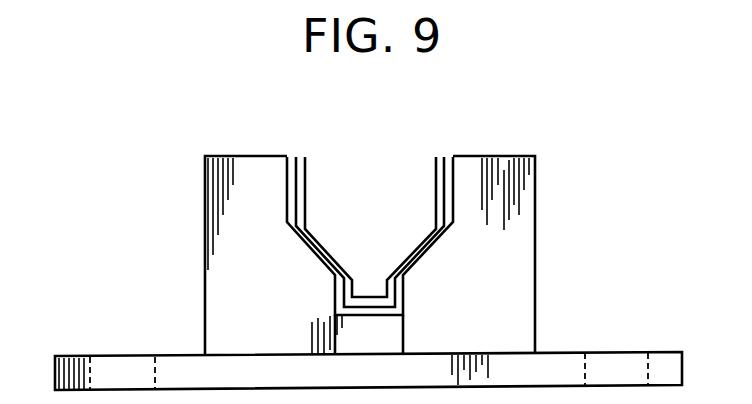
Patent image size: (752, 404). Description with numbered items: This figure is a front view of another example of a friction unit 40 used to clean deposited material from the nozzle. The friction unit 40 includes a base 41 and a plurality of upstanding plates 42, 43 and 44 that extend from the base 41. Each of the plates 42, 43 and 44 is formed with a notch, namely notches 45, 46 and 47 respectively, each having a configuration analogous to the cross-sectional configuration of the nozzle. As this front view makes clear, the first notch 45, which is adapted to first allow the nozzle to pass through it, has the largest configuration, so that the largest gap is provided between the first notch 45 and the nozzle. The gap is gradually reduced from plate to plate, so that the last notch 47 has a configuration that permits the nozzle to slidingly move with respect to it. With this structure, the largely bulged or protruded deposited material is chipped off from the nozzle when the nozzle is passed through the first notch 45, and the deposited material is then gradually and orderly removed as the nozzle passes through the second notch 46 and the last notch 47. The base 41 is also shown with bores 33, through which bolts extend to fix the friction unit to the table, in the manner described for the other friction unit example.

The bores 33 is at (108, 352).
The friction unit 40 is at (435, 212).
The base 41 is at (566, 352).
The upstanding plate 42 is at (503, 168).
The upstanding plate 43 is at (450, 155).
The upstanding plate 44 is at (437, 160).
The first notch 45 is at (287, 158).
The second notch 46 is at (307, 158).
The last notch 47 is at (308, 170).